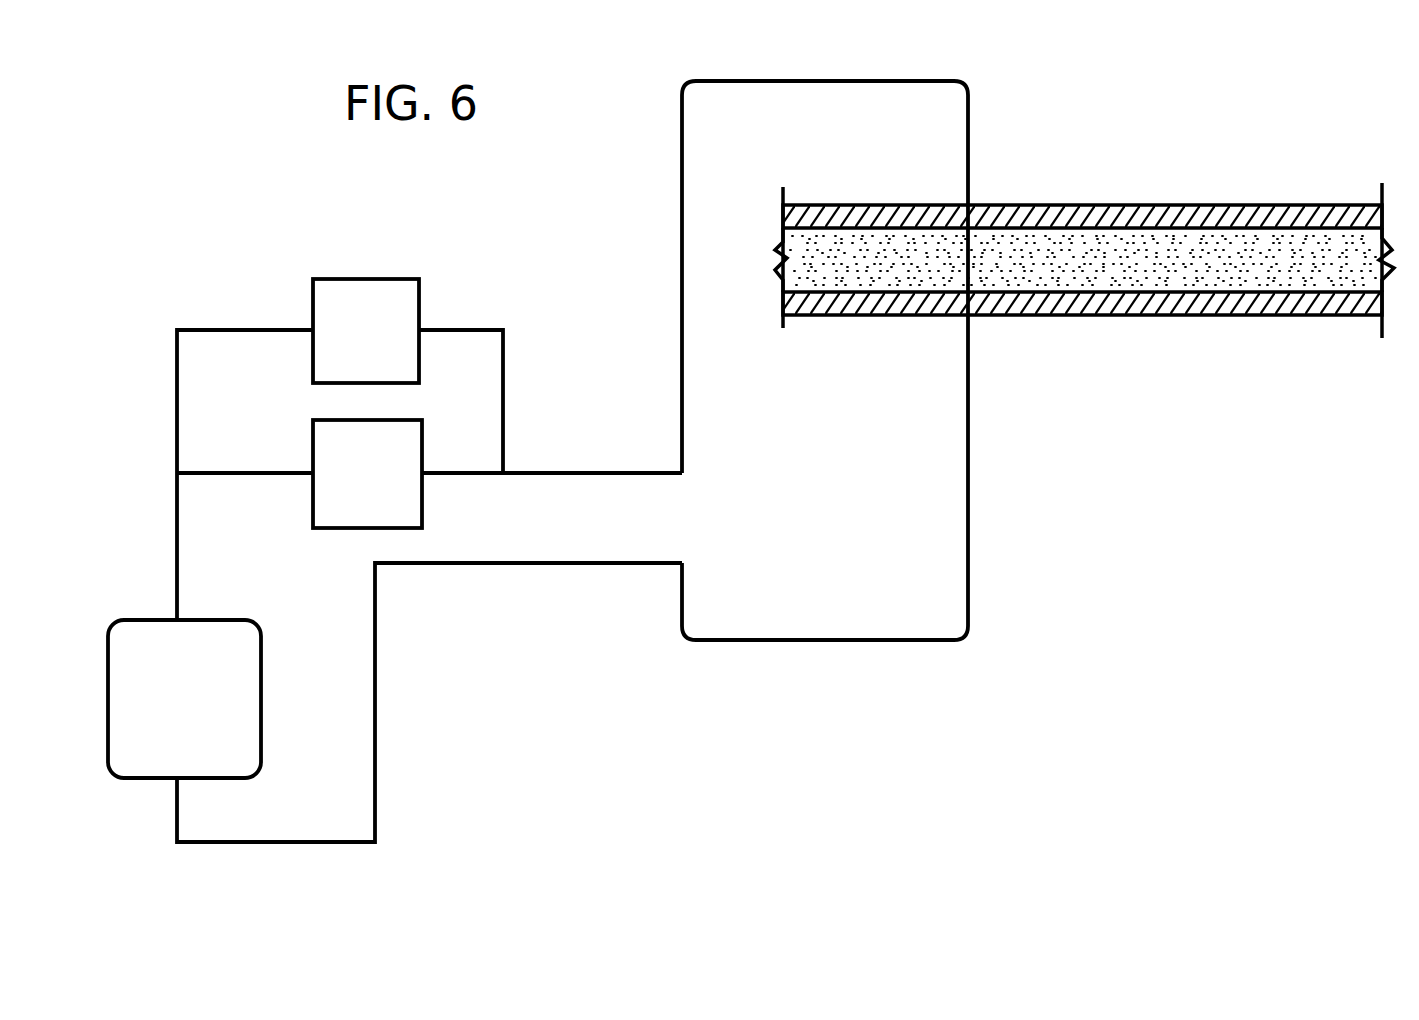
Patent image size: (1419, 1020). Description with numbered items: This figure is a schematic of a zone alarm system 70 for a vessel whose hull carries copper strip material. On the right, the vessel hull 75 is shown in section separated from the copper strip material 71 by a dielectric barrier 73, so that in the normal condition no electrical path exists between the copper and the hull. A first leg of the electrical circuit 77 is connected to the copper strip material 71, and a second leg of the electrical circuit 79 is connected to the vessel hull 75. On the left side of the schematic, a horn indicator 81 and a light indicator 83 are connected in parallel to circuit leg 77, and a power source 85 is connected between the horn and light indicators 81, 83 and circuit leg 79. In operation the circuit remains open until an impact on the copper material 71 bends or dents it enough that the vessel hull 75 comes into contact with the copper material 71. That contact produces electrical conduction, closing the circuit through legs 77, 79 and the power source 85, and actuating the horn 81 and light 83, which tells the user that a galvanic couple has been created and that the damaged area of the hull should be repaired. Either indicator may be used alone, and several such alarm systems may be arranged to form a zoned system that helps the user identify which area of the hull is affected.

The zone alarm system 70 is at (1085, 85).
The copper strip material 71 is at (1172, 215).
The dielectric barrier 73 is at (1272, 240).
The vessel hull 75 is at (1192, 306).
The first leg of the electrical circuit 77 is at (503, 396).
The second leg of the electrical circuit 79 is at (968, 495).
The horn indicator 81 is at (318, 300).
The light indicator 83 is at (320, 512).
The power source 85 is at (145, 632).